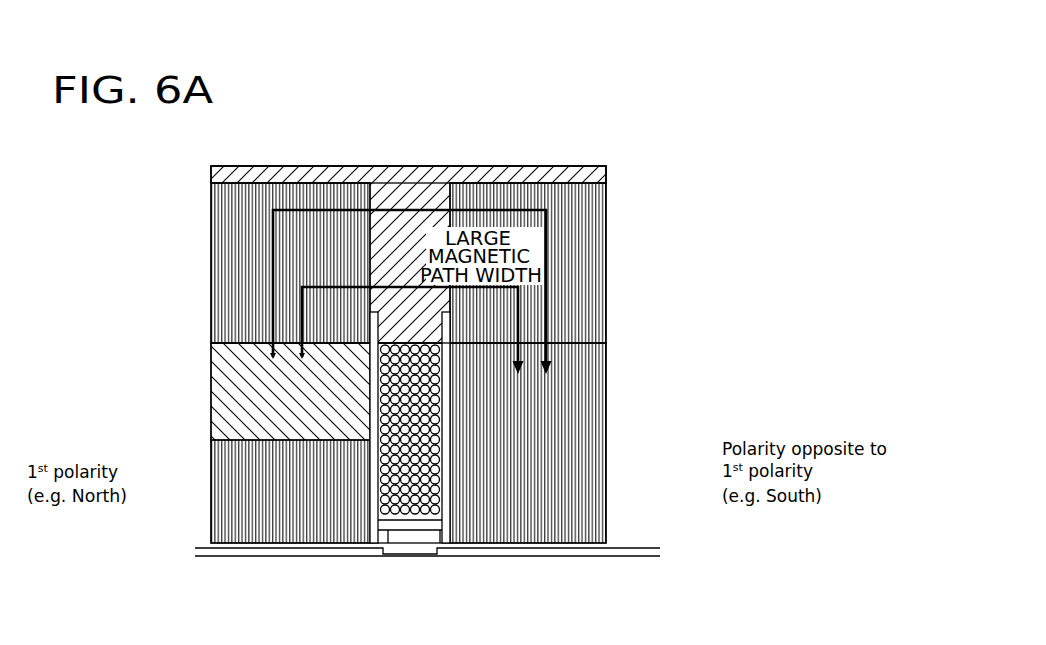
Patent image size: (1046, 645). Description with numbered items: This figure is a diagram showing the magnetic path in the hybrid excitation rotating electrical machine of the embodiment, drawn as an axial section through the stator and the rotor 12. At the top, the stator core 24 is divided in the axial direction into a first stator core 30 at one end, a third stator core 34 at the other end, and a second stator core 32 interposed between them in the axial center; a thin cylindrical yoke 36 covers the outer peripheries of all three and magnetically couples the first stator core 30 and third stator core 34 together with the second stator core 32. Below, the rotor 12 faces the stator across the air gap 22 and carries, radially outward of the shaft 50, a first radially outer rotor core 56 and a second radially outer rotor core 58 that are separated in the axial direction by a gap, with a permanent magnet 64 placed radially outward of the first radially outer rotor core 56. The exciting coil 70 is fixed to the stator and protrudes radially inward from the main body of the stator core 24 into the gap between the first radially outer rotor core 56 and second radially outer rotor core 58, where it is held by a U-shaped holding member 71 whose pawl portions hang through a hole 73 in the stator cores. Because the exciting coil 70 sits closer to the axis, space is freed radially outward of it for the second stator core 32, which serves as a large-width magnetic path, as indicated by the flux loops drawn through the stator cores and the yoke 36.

The rotor 12 is at (636, 415).
The air gap 22 is at (603, 341).
The stator core 24 is at (636, 274).
The first stator core 30 is at (232, 243).
The second stator core 32 is at (408, 240).
The third stator core 34 is at (585, 230).
The yoke 36 is at (313, 168).
The shaft 50 is at (630, 548).
The first radially outer rotor core 56 is at (232, 490).
The second radially outer rotor core 58 is at (588, 475).
The permanent magnet 64 is at (232, 392).
The exciting coil 70 is at (480, 543).
The holding member 71 is at (480, 545).
The hole 73 is at (448, 343).